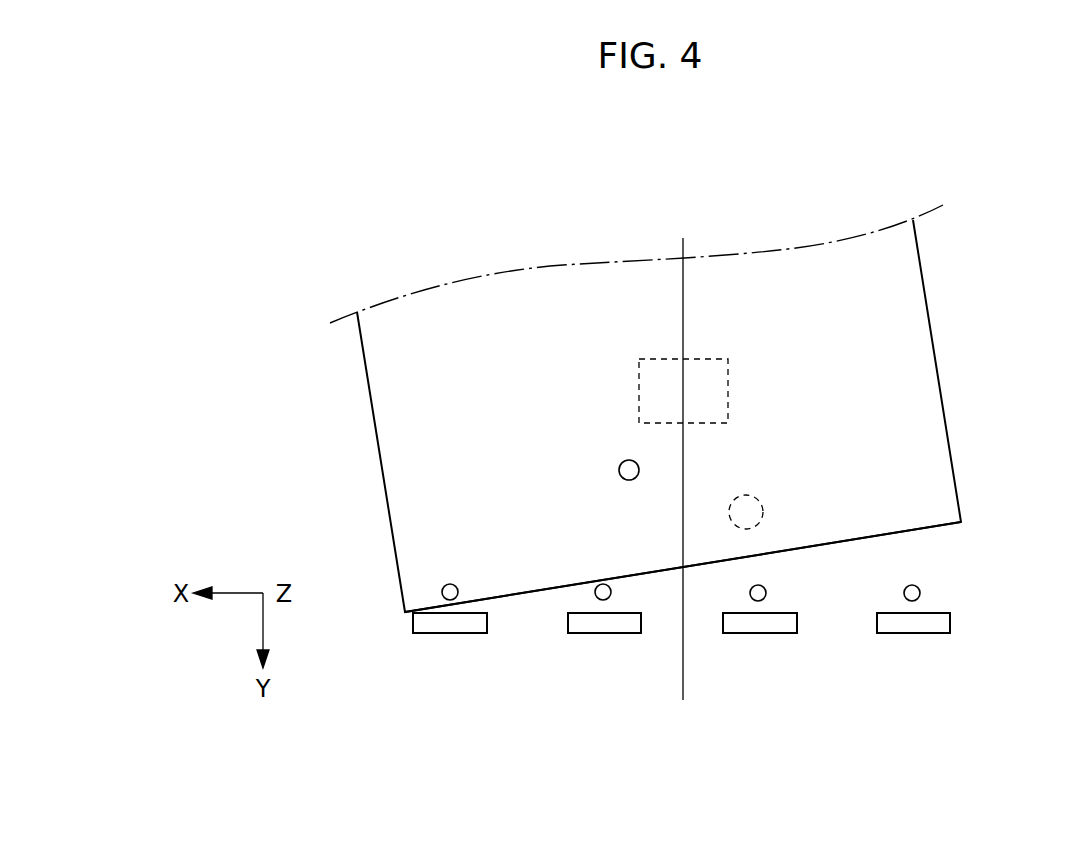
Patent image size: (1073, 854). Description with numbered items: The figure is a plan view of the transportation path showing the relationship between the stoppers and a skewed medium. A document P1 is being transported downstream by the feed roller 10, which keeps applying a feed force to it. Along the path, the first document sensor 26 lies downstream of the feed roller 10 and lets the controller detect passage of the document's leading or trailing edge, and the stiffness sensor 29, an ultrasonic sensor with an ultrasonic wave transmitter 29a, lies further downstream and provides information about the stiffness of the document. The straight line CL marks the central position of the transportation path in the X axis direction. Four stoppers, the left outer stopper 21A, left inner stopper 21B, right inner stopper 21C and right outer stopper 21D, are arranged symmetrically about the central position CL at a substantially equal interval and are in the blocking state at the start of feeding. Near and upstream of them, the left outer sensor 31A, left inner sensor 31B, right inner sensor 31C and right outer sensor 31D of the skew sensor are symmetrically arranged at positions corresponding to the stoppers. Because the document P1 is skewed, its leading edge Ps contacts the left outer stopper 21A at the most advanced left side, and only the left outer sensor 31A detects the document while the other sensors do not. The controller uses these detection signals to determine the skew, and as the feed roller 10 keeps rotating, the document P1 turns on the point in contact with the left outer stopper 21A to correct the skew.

The feed roller 10 is at (653, 359).
The first document sensor 26 is at (618, 462).
The stiffness sensor 29 is at (894, 478).
The ultrasonic wave transmitter 29a is at (761, 496).
The left outer stopper 21A is at (432, 633).
The left inner stopper 21B is at (587, 633).
The right inner stopper 21C is at (742, 633).
The right outer stopper 21D is at (896, 633).
The left outer sensor 31A is at (458, 594).
The left inner sensor 31B is at (611, 594).
The right inner sensor 31C is at (766, 595).
The right outer sensor 31D is at (920, 595).
The document P1 is at (934, 352).
The leading edge Ps is at (922, 528).
The central position CL is at (689, 453).